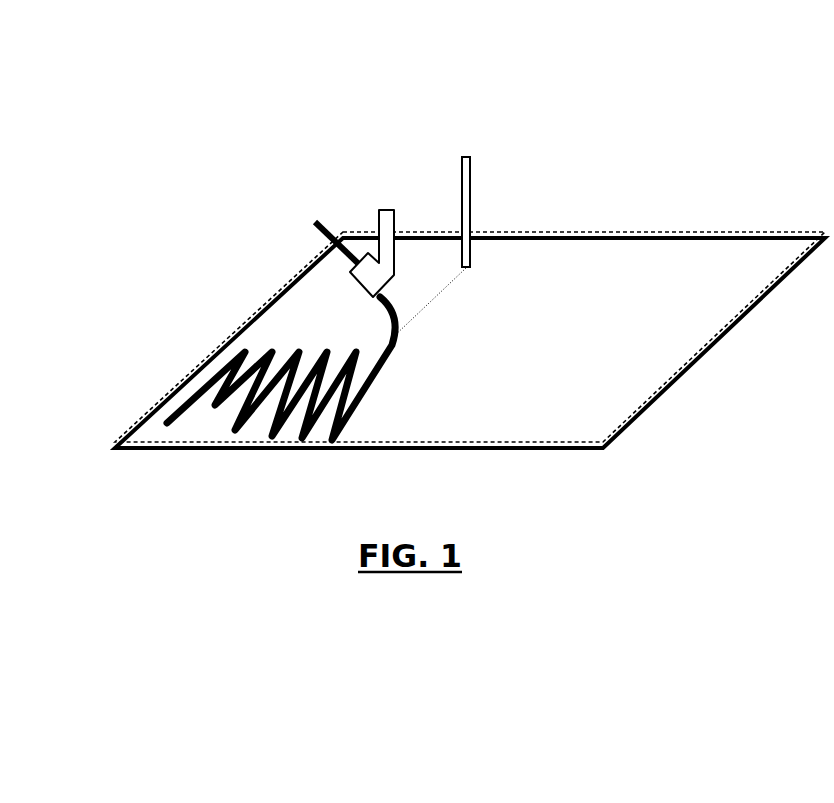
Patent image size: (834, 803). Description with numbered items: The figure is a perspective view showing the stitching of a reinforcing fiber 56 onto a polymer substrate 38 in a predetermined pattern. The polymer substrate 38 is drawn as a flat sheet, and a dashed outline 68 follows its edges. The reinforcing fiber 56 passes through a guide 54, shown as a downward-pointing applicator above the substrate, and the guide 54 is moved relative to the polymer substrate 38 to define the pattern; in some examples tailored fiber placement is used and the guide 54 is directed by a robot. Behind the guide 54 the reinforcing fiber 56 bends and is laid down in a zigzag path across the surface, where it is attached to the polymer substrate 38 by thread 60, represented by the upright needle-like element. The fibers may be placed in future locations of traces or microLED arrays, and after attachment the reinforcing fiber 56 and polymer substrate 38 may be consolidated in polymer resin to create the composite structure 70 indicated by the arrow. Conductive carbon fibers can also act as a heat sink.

The polymer substrate 38 is at (723, 338).
The film layer 68 is at (678, 232).
The thread 60 is at (471, 233).
The reinforcing fiber 56 is at (390, 322).
The guide 54 is at (383, 210).
The composite structure 70 is at (542, 137).